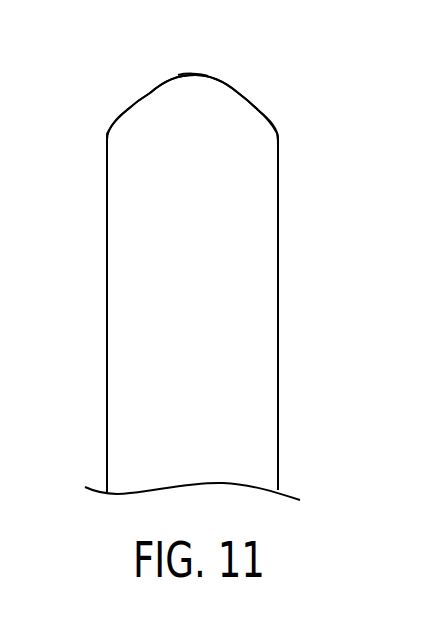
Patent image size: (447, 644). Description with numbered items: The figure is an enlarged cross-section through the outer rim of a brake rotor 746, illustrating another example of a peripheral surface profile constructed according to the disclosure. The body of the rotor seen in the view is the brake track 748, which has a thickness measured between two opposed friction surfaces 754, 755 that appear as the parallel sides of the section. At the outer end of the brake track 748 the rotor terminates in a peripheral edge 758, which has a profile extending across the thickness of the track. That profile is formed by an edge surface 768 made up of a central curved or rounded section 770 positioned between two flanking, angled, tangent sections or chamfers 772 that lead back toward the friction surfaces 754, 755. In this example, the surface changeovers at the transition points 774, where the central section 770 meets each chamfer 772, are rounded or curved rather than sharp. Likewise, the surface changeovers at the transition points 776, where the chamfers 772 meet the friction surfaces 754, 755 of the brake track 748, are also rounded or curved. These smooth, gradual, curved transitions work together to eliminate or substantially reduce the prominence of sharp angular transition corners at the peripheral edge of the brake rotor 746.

The brake rotor 746 is at (378, 178).
The brake track 748 is at (294, 362).
The friction surface 754 is at (107, 298).
The friction surface 755 is at (278, 298).
The peripheral edge 758 is at (257, 73).
The edge surface 768 is at (135, 90).
The central curved section 770 is at (184, 75).
The chamfer 772 is at (127, 110).
The transition point 774 is at (150, 93).
The transition point 776 is at (108, 133).